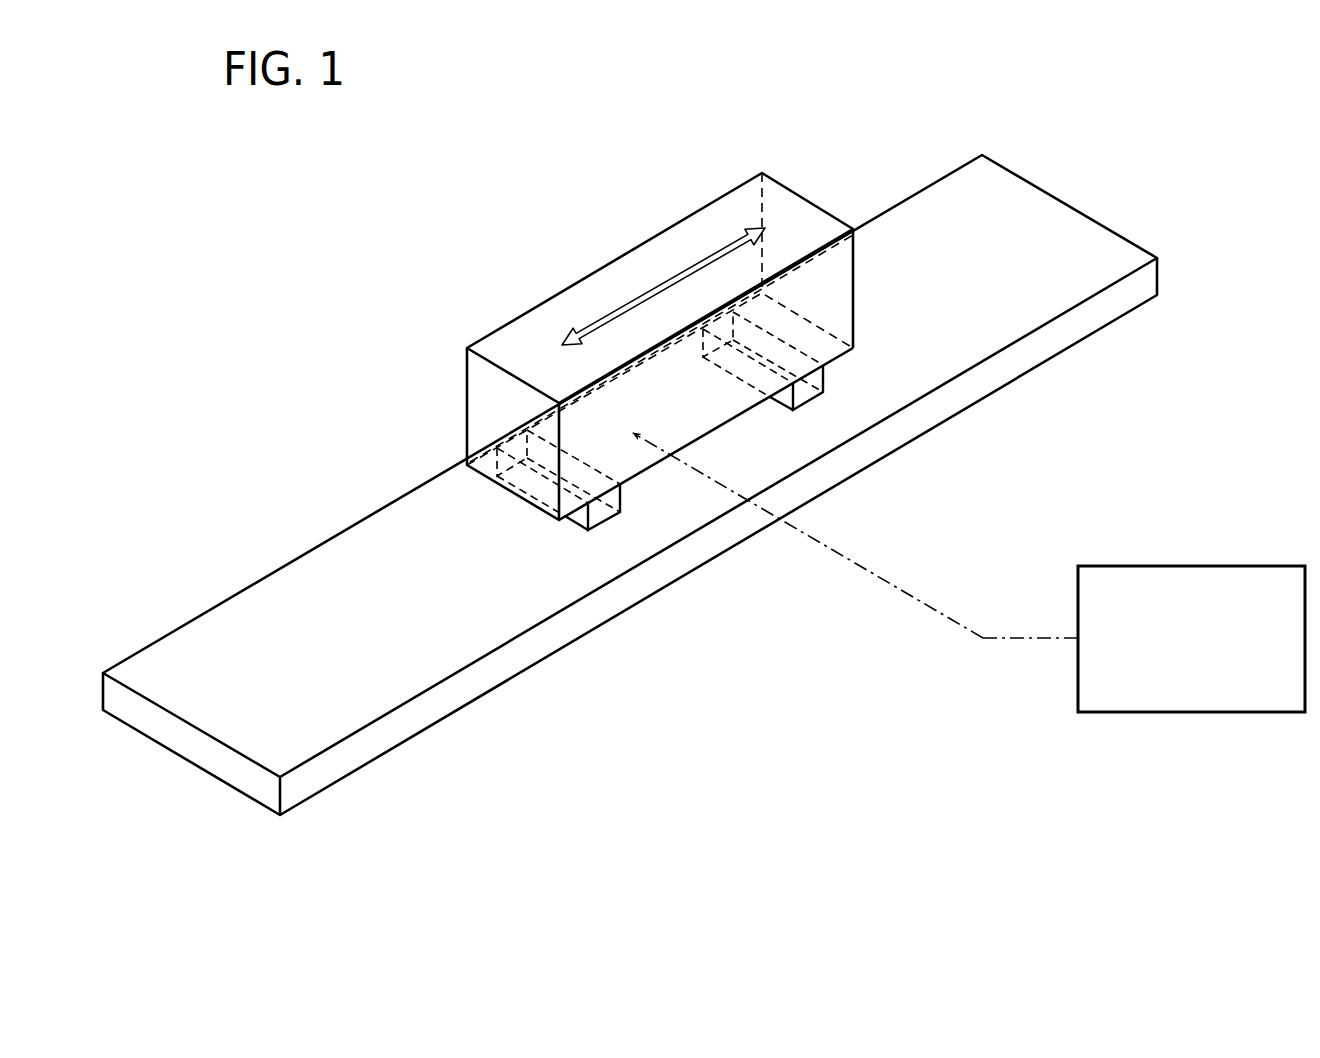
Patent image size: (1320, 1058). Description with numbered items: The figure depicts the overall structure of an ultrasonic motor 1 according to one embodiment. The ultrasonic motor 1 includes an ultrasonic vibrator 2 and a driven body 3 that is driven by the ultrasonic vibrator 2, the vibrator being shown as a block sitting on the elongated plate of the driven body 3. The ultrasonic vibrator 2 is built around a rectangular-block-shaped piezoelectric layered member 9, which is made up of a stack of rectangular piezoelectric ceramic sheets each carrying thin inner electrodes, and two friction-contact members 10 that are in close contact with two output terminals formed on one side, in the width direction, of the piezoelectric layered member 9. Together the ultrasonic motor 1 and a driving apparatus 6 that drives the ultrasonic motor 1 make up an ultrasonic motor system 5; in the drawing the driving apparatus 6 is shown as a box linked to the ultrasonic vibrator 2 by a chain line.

The ultrasonic motor 1 is at (1048, 138).
The ultrasonic vibrator 2 is at (698, 371).
The driven body 3 is at (300, 790).
The ultrasonic motor system 5 is at (866, 812).
The driving apparatus 6 is at (1183, 713).
The piezoelectric layered member 9 is at (853, 273).
The friction-contact member 10 is at (573, 522).